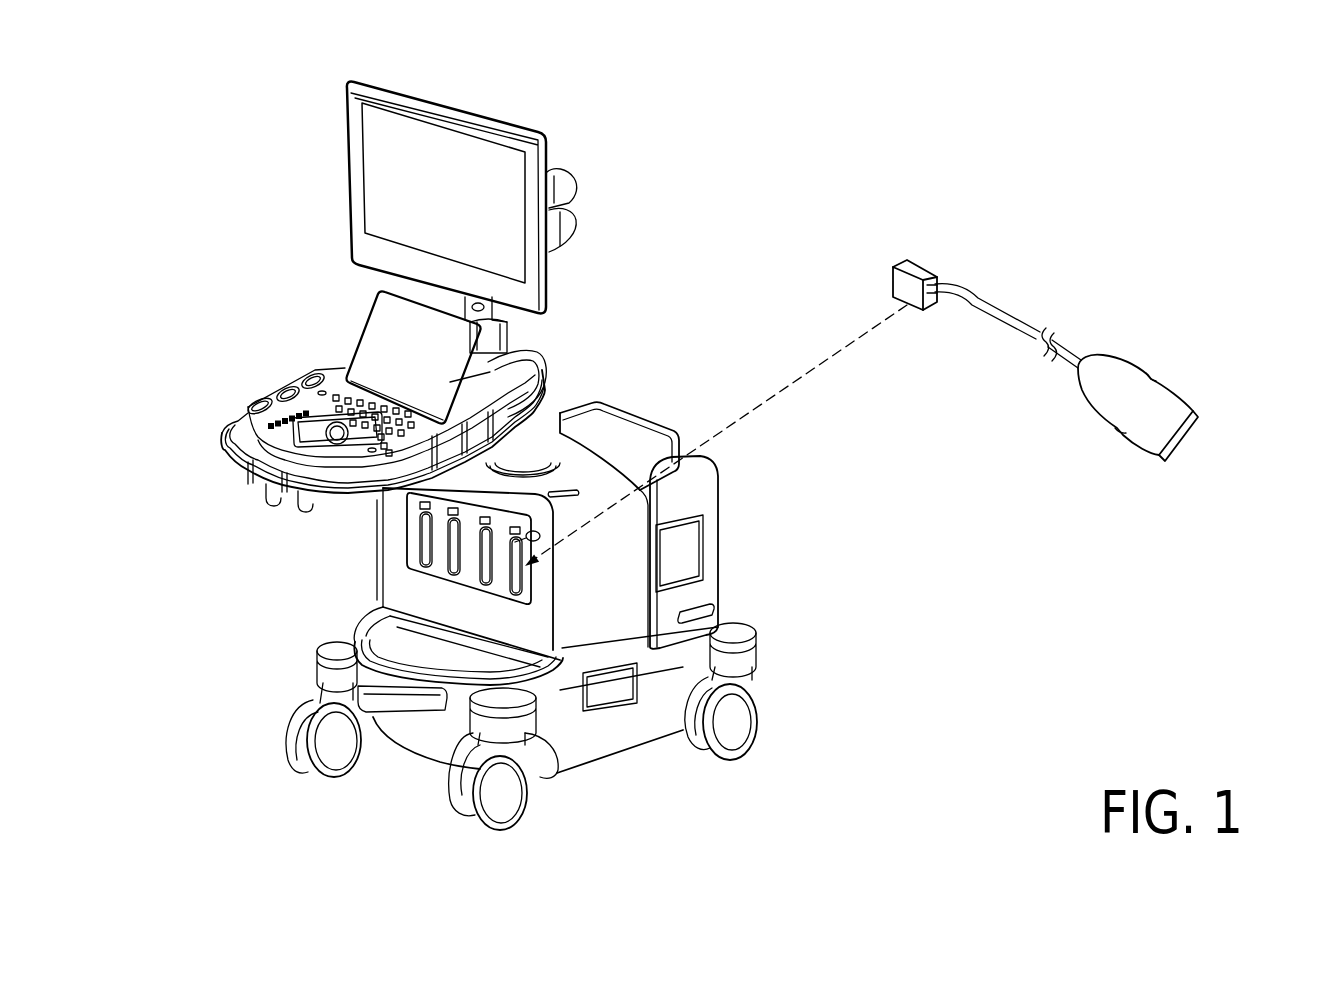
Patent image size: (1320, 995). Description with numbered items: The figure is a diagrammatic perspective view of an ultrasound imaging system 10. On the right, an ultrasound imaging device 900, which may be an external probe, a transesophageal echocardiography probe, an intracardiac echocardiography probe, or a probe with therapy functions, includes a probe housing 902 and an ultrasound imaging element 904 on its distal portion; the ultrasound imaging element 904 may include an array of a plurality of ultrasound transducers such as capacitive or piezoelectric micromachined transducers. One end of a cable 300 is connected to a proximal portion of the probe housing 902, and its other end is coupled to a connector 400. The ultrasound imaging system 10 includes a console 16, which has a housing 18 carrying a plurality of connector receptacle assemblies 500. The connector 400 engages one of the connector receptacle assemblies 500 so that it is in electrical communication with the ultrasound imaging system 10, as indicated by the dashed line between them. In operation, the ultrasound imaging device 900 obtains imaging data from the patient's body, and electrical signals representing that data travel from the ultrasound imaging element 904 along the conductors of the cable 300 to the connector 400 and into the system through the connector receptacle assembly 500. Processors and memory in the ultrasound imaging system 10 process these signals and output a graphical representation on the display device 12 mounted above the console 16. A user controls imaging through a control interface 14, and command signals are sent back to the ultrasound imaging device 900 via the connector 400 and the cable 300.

The ultrasound imaging system 10 is at (262, 142).
The display device 12 is at (547, 280).
The control interface 14 is at (268, 392).
The console 16 is at (383, 538).
The housing 18 is at (383, 573).
The connector receptacle assembly 500 is at (530, 614).
The connector 400 is at (920, 262).
The cable 300 is at (998, 308).
The ultrasound imaging device 900 is at (1132, 367).
The probe housing 902 is at (1128, 438).
The ultrasound imaging element 904 is at (1188, 443).